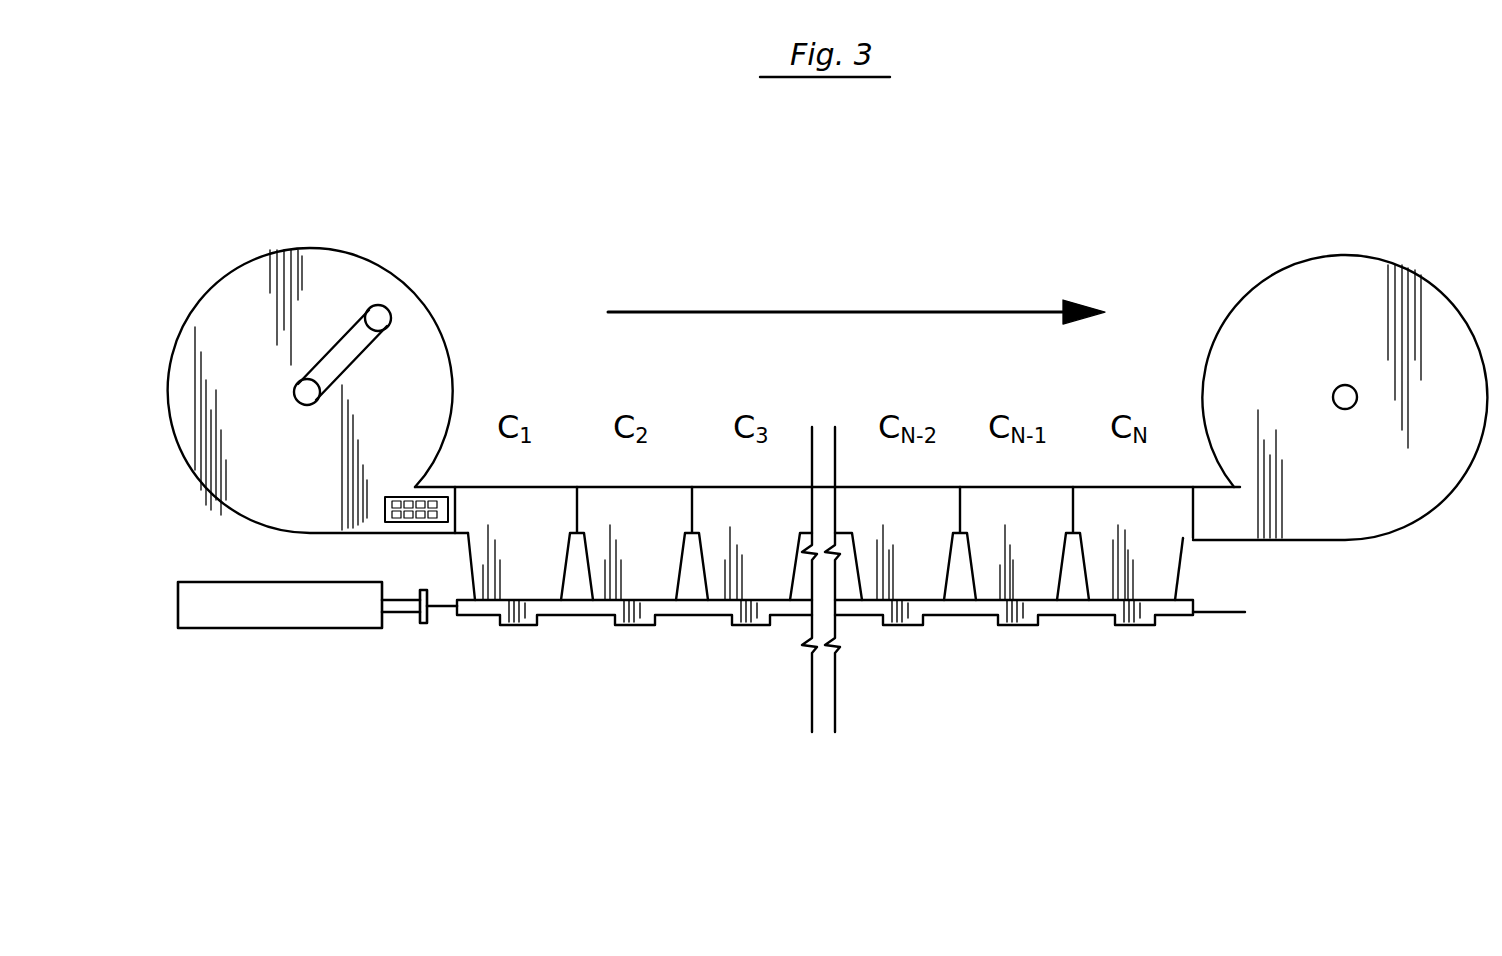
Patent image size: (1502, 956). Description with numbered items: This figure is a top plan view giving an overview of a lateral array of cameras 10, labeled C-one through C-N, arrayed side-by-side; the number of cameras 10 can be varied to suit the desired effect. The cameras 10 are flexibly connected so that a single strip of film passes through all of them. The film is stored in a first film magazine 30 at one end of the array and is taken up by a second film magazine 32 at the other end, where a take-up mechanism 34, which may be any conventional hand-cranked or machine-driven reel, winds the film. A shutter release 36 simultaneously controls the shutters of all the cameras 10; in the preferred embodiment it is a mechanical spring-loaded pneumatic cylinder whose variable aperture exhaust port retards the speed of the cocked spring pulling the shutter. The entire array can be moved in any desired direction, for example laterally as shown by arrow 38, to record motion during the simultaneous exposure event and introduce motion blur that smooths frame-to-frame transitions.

The cameras 10 is at (502, 533).
The first film magazine 30 is at (1322, 475).
The second film magazine 32 is at (300, 465).
The take-up mechanism 34 is at (387, 330).
The shutter release 36 is at (360, 620).
The arrow 38 is at (1033, 315).